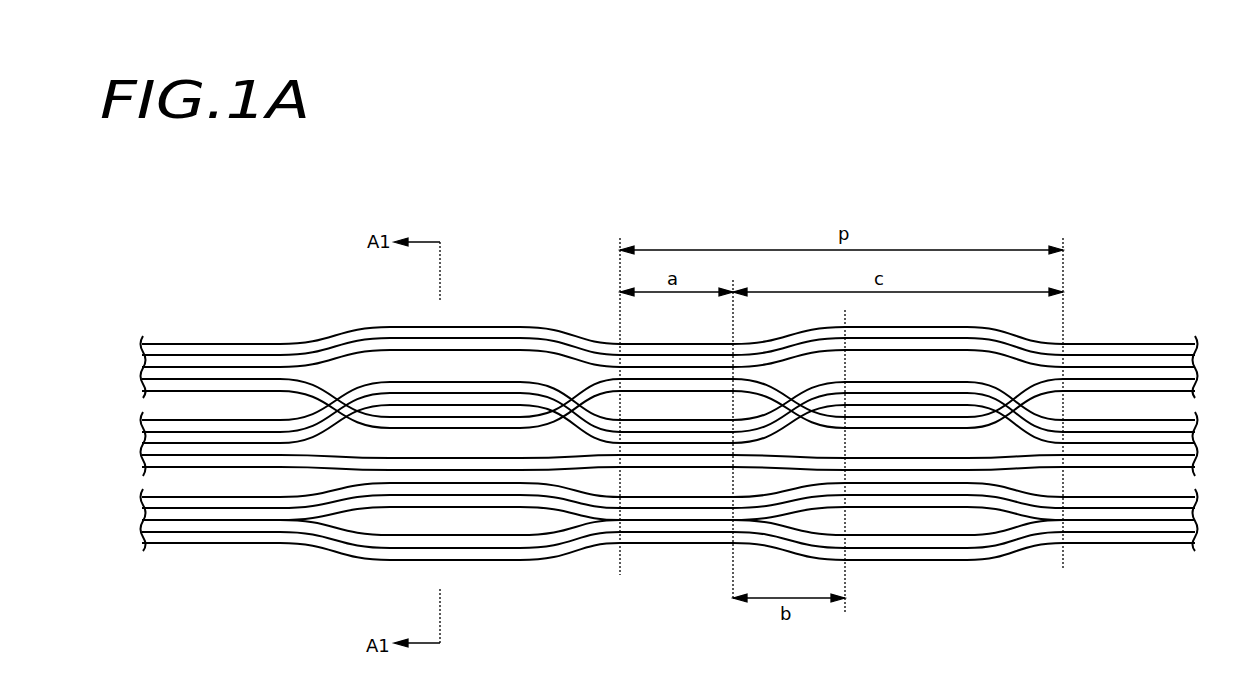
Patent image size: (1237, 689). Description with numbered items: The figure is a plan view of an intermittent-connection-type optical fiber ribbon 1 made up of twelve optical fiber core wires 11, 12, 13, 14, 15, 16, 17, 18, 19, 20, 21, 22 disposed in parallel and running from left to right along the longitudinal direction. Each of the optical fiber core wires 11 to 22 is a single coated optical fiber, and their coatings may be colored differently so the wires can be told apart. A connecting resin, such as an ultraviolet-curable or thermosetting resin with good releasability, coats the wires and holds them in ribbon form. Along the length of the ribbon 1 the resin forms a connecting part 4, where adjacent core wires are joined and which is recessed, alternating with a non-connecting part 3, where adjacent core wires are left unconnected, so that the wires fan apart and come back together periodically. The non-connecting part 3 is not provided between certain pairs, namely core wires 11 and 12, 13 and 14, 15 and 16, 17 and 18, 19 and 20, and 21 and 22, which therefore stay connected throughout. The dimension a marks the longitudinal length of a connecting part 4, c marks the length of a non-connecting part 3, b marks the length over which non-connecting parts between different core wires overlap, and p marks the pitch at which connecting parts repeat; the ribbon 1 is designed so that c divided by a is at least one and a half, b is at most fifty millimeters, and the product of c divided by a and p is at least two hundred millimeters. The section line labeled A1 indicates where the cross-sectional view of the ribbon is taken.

The intermittent-connection-type optical fiber ribbon 1 is at (634, 405).
The non-connecting part 3 is at (463, 367).
The connecting part 4 is at (445, 404).
The optical fiber core wire 11 is at (242, 344).
The optical fiber core wire 12 is at (213, 354).
The optical fiber core wire 13 is at (187, 367).
The optical fiber core wire 14 is at (167, 380).
The optical fiber core wire 15 is at (143, 426).
The optical fiber core wire 16 is at (143, 441).
The optical fiber core wire 17 is at (143, 444).
The optical fiber core wire 18 is at (143, 457).
The optical fiber core wire 19 is at (165, 507).
The optical fiber core wire 20 is at (192, 520).
The optical fiber core wire 21 is at (225, 531).
The optical fiber core wire 22 is at (250, 541).